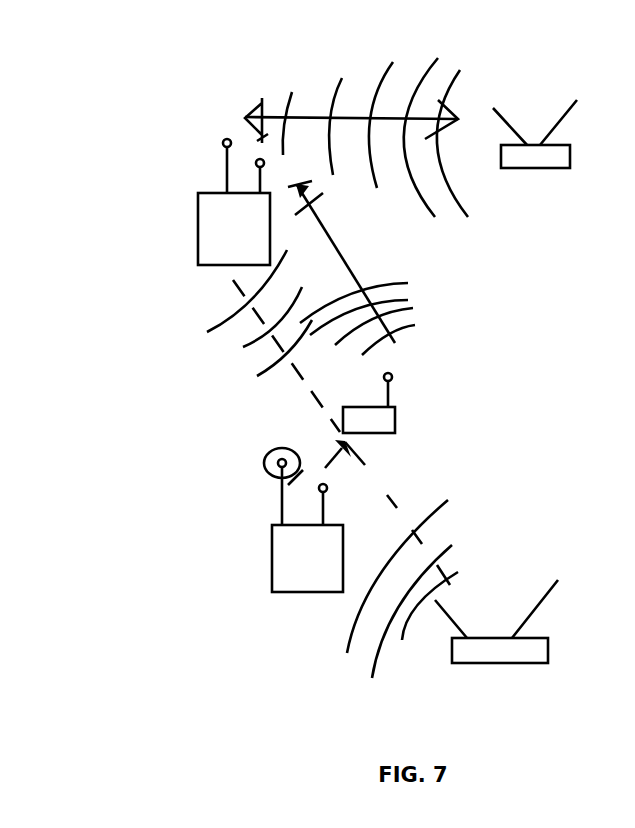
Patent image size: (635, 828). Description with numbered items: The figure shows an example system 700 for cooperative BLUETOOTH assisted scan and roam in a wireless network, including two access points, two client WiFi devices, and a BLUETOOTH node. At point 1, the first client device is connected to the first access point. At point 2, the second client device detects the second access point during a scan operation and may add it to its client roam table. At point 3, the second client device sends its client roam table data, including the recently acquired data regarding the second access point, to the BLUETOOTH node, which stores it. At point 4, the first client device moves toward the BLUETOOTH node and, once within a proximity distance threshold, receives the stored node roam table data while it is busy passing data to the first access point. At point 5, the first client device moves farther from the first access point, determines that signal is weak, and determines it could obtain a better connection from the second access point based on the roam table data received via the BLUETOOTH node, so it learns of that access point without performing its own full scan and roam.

The system 700 is at (114, 434).
The point 1 is at (378, 127).
The point 2 is at (423, 588).
The point 3 is at (387, 513).
The point 4 is at (381, 268).
The point 5 is at (270, 353).